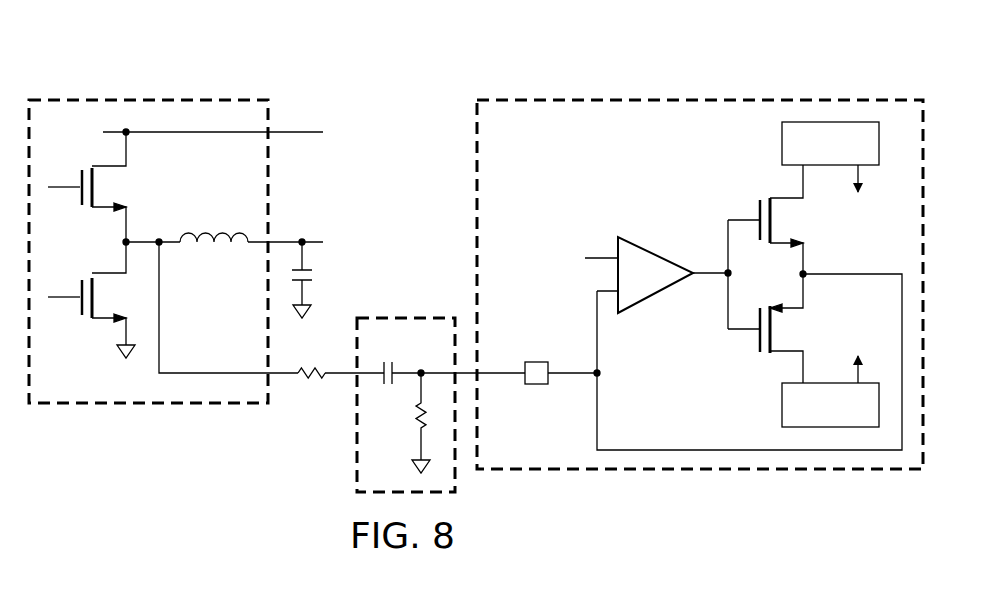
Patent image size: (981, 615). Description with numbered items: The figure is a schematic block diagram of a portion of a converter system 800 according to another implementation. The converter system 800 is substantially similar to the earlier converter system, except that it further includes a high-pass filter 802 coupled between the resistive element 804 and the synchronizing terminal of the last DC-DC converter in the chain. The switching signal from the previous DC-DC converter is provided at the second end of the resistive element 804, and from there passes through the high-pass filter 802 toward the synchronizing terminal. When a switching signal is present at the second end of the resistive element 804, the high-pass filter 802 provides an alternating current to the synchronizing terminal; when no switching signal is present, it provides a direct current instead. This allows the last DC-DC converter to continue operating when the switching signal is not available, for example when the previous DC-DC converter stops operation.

The converter system 800 is at (316, 64).
The high-pass filter 802 is at (356, 456).
The resistive element Rd_N 804 is at (305, 380).